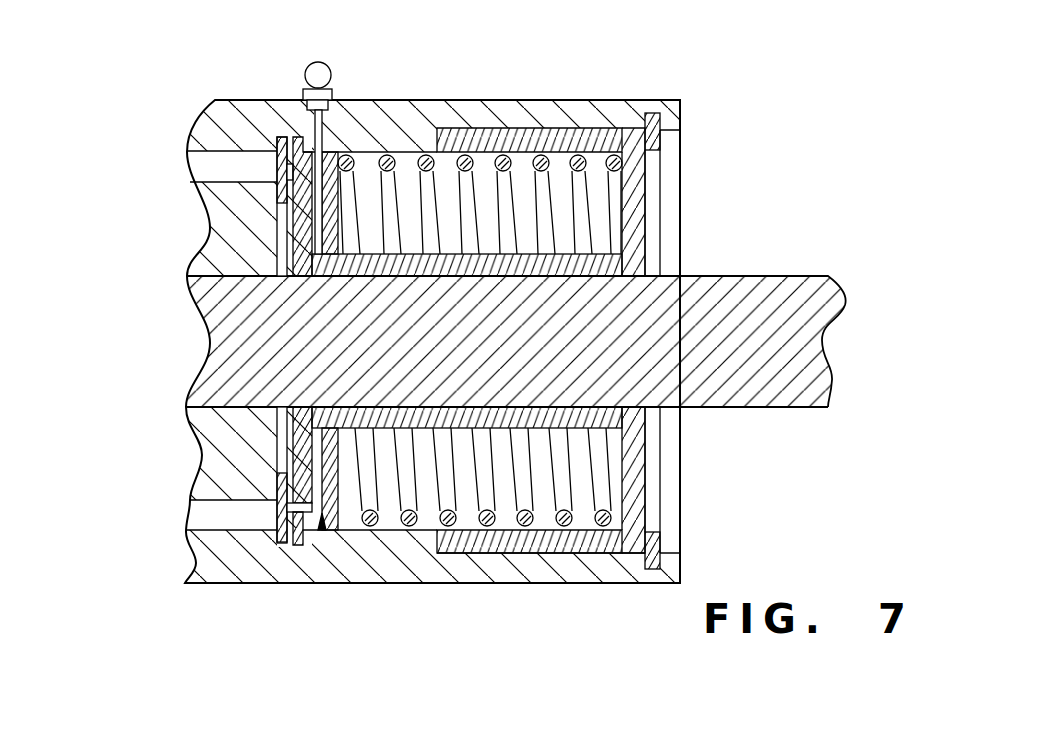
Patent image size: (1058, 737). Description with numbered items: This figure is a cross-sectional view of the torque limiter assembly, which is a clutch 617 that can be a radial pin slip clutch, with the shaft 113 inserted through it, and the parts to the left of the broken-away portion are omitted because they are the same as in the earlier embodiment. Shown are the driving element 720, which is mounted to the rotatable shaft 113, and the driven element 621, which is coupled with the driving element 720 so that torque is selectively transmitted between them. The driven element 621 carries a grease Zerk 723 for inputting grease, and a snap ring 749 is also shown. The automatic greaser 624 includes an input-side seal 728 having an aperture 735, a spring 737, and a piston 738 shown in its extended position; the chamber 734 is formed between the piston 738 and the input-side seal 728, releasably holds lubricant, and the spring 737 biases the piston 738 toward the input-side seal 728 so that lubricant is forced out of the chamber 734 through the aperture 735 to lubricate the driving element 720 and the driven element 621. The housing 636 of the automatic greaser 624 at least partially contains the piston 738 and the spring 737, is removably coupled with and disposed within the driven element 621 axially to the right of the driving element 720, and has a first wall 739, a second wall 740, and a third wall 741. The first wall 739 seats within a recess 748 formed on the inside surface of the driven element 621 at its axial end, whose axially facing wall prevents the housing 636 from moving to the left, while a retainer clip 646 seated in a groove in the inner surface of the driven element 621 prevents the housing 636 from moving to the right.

The shaft 113 is at (788, 290).
The clutch 617 is at (150, 121).
The driven element 621 is at (382, 571).
The automatic greaser 624 is at (722, 91).
The housing 636 is at (556, 565).
The retainer clip 646 is at (660, 142).
The driving element 720 is at (213, 227).
The grease Zerk 723 is at (311, 75).
The input-side seal 728 is at (293, 472).
The chamber 734 is at (321, 526).
The aperture 735 is at (292, 510).
The spring 737 is at (602, 497).
The piston 738 is at (340, 207).
The first wall 739 is at (558, 140).
The second wall 740 is at (638, 205).
The third wall 741 is at (626, 386).
The recess 748 is at (470, 143).
The snap ring 749 is at (228, 103).